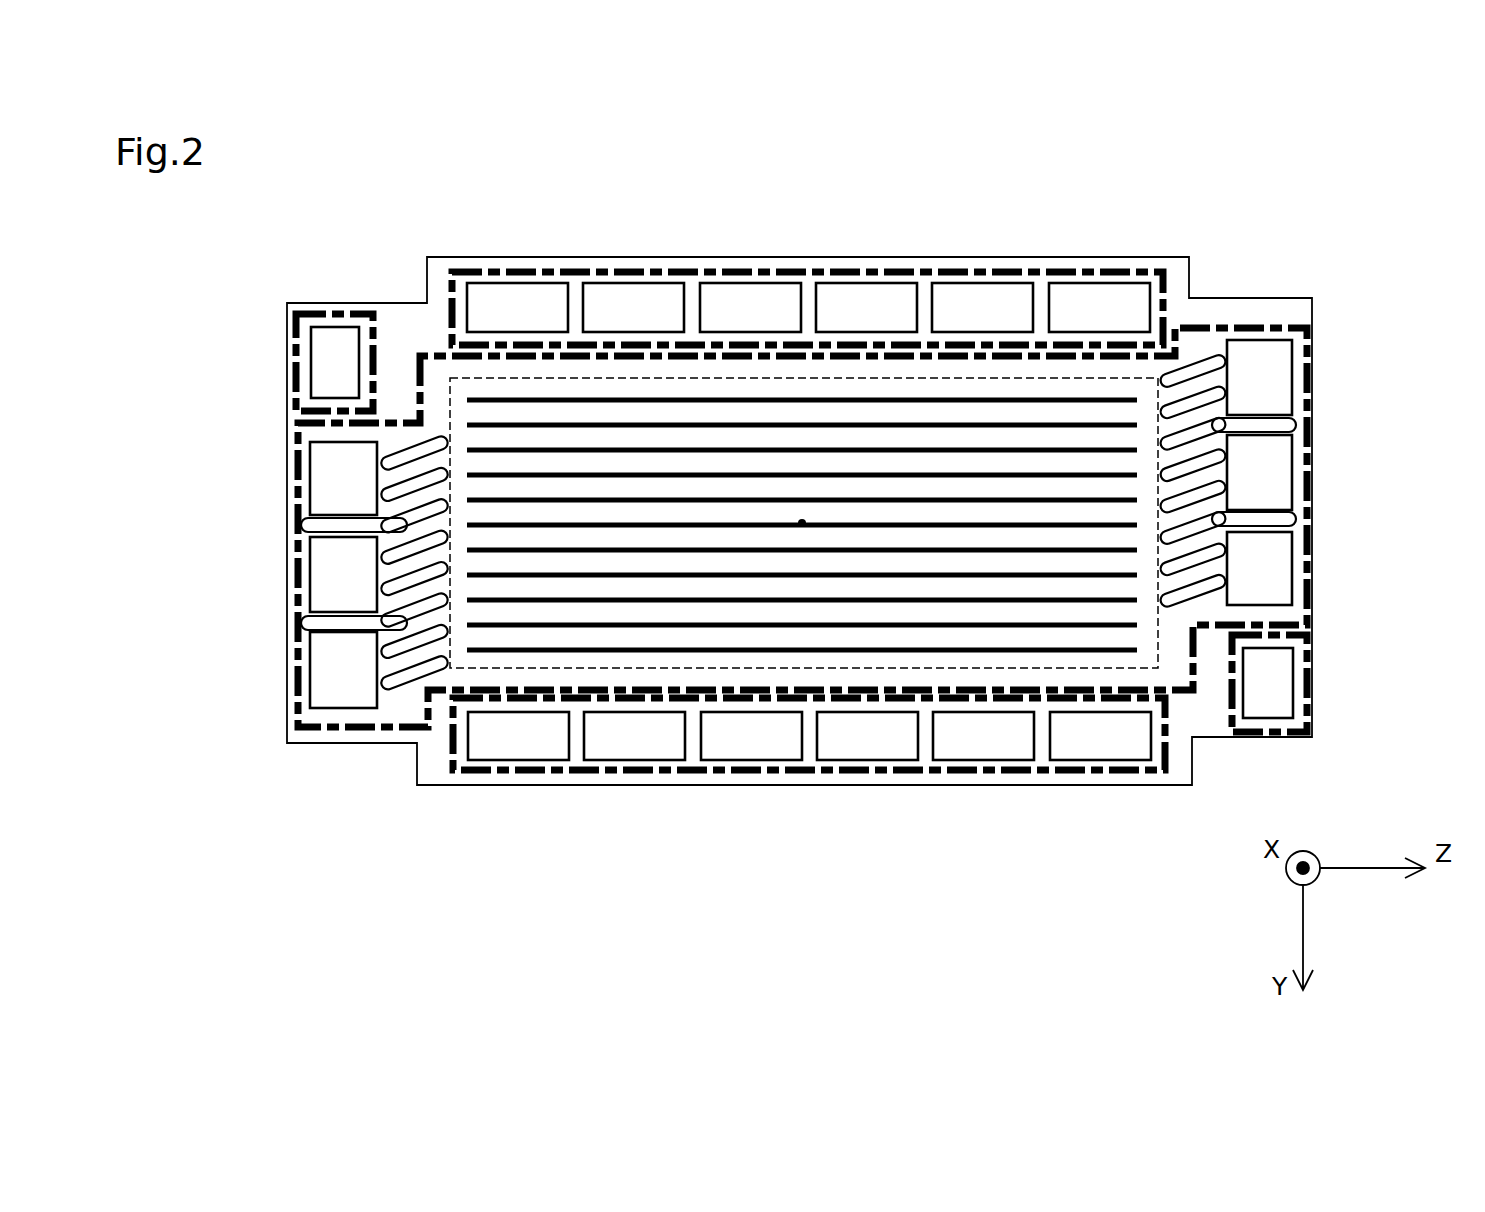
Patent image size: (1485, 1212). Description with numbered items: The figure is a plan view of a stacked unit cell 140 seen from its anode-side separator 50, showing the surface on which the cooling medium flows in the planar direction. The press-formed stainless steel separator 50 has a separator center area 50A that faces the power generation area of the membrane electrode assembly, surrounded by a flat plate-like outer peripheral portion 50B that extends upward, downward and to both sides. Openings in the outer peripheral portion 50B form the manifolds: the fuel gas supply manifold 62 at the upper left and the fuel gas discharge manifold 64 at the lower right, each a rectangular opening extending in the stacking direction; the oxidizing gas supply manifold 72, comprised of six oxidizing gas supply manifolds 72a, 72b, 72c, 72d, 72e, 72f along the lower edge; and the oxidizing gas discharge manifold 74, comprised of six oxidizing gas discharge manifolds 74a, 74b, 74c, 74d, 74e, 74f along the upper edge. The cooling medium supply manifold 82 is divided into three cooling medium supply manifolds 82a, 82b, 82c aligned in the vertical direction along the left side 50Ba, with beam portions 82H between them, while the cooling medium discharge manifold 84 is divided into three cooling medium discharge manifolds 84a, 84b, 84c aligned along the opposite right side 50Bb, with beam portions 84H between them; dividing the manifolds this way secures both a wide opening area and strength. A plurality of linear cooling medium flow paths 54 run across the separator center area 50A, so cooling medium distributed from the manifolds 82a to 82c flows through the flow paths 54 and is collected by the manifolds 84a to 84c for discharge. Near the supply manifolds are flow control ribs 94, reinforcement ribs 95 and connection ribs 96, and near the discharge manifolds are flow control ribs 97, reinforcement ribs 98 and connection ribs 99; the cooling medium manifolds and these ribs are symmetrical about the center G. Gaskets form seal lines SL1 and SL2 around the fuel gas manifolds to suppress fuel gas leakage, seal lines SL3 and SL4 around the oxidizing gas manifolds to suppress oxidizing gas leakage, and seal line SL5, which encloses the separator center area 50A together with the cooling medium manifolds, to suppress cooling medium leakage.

The unit cell 140 is at (1327, 182).
The anode-side separator 50 is at (1273, 298).
The separator center area 50A is at (1180, 352).
The outer peripheral portion 50B is at (1200, 740).
The outer peripheral portion on the left side 50Ba is at (292, 464).
The outer peripheral portion on the right side 50Bb is at (1313, 305).
The cooling medium flow paths 54 is at (468, 440).
The fuel gas supply manifold 62 is at (318, 368).
The fuel gas discharge manifold 64 is at (1290, 683).
The oxidizing gas supply manifold 72 is at (1142, 852).
The oxidizing gas supply manifold 72a is at (520, 762).
The oxidizing gas supply manifold 72b is at (640, 762).
The oxidizing gas supply manifold 72c is at (752, 762).
The oxidizing gas supply manifold 72d is at (870, 762).
The oxidizing gas supply manifold 72e is at (985, 762).
The oxidizing gas supply manifold 72f is at (1112, 762).
The oxidizing gas discharge manifold 74 is at (1142, 200).
The oxidizing gas discharge manifold 74a is at (1092, 283).
The oxidizing gas discharge manifold 74b is at (975, 283).
The oxidizing gas discharge manifold 74c is at (858, 283).
The oxidizing gas discharge manifold 74d is at (740, 283).
The oxidizing gas discharge manifold 74e is at (616, 283).
The oxidizing gas discharge manifold 74f is at (510, 283).
The cooling medium supply manifold 82 is at (222, 475).
The cooling medium supply manifold 82a is at (322, 505).
The cooling medium supply manifold 82b is at (322, 557).
The cooling medium supply manifold 82c is at (322, 650).
The beam portions 82H is at (350, 517).
The cooling medium discharge manifold 84 is at (1390, 370).
The cooling medium discharge manifold 84a is at (1300, 552).
The cooling medium discharge manifold 84b is at (1300, 474).
The cooling medium discharge manifold 84c is at (1300, 400).
The beam portions 84H is at (1283, 393).
The flow control ribs 94 is at (417, 692).
The reinforcement ribs 95 is at (392, 620).
The connection ribs 96 is at (400, 650).
The flow control ribs 97 is at (1197, 378).
The reinforcement ribs 98 is at (1310, 347).
The connection ribs 99 is at (1243, 425).
The center G is at (805, 520).
The seal line SL1 is at (292, 330).
The seal line SL2 is at (1318, 714).
The seal line SL3 is at (467, 790).
The seal line SL4 is at (1145, 345).
The seal line SL5 is at (352, 730).